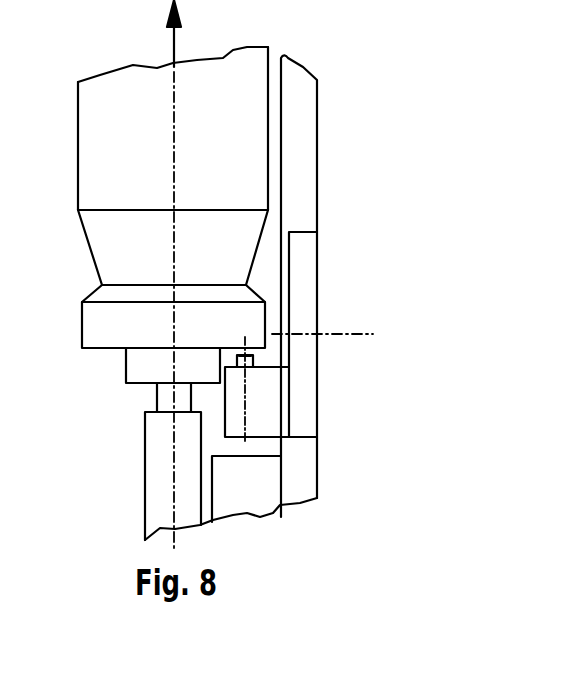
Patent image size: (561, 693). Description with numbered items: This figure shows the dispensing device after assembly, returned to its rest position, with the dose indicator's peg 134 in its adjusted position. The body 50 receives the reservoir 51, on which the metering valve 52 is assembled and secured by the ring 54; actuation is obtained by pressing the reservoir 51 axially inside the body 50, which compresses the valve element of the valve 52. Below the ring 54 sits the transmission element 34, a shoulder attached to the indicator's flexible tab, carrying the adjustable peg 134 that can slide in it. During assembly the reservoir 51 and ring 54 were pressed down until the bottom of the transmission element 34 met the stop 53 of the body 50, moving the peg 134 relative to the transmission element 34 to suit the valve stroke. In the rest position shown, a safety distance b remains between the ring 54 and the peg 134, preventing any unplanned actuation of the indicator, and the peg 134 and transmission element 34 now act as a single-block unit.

The body 50 is at (302, 145).
The reservoir 51 is at (92, 117).
The metering valve 52 is at (167, 397).
The stop 53 is at (252, 457).
The ring 54 is at (93, 327).
The transmission element 34 is at (268, 420).
The adjustable peg 134 is at (256, 358).
The safety distance b is at (255, 353).